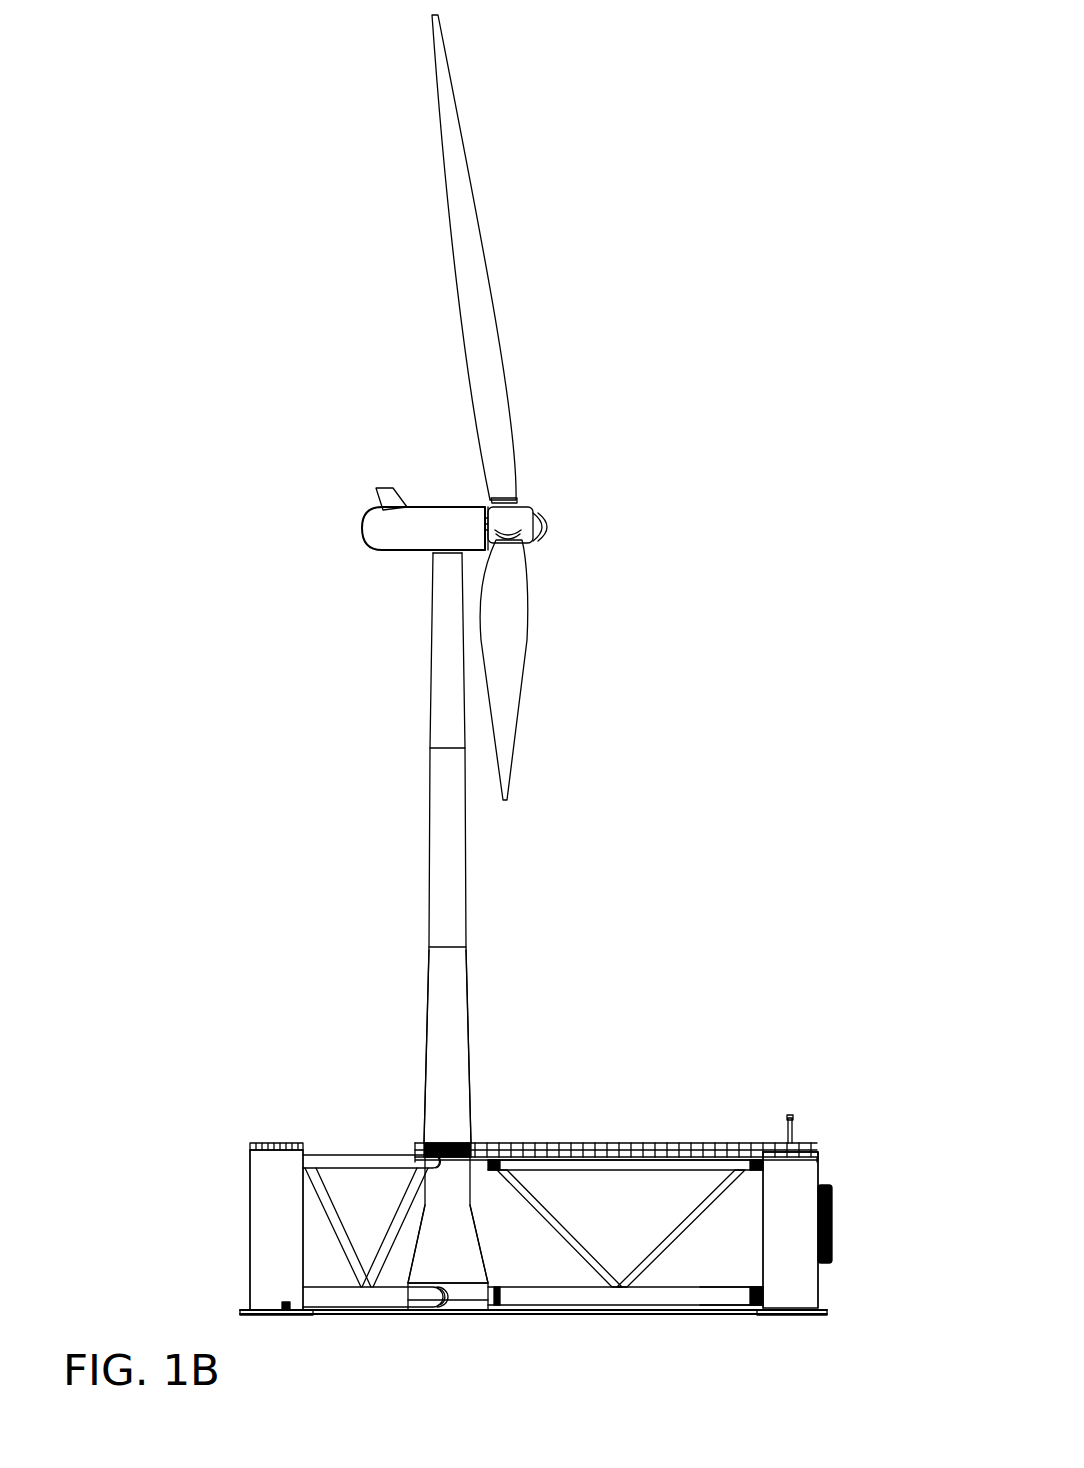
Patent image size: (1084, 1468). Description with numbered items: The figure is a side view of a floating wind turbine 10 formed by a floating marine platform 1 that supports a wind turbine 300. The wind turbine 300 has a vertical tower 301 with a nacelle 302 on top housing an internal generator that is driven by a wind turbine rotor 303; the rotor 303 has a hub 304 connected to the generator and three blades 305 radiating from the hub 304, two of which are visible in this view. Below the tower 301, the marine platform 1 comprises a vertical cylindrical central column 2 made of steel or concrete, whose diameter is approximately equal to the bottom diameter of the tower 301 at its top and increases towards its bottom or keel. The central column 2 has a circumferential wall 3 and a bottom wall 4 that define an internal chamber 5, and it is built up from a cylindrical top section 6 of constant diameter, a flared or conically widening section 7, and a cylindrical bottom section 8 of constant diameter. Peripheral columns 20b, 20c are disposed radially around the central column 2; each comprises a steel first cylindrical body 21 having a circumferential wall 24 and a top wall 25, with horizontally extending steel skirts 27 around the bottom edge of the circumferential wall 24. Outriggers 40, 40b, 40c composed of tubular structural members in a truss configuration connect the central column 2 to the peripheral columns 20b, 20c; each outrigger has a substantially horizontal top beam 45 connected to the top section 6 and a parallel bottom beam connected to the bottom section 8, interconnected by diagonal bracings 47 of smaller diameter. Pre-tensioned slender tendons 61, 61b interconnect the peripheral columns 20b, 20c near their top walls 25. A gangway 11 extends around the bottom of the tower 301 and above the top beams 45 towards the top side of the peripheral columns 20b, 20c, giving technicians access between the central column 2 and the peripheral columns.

The floating wind turbine 10 is at (278, 867).
The blades 305 is at (495, 325).
The nacelle 302 is at (428, 507).
The wind turbine rotor 303 is at (520, 515).
The hub 304 is at (545, 520).
The wind turbine 300 is at (465, 1020).
The tower 301 is at (460, 1087).
The gangway 11 is at (655, 1140).
The top beam 45 is at (705, 1157).
The marine platform 1 is at (265, 1143).
The peripheral column 20c is at (223, 1200).
The peripheral column 20b is at (800, 1178).
The first cylindrical body 21 is at (255, 1240).
The top wall 25 is at (818, 1178).
The circumferential wall 24 is at (832, 1290).
The skirts 27 is at (255, 1312).
The tendon 61b is at (375, 1147).
The outrigger 40c is at (332, 1297).
The bottom wall 4 is at (425, 1315).
The top section 6 is at (440, 1195).
The central column 2 is at (412, 1235).
The internal chamber 5 is at (455, 1228).
The circumferential wall 3 is at (475, 1250).
The flared section 7 is at (480, 1272).
The bottom section 8 is at (472, 1297).
The tendon 61 is at (555, 1312).
The outrigger 40 is at (630, 1302).
The outrigger 40b is at (677, 1297).
The diagonal bracings 47 is at (585, 1252).